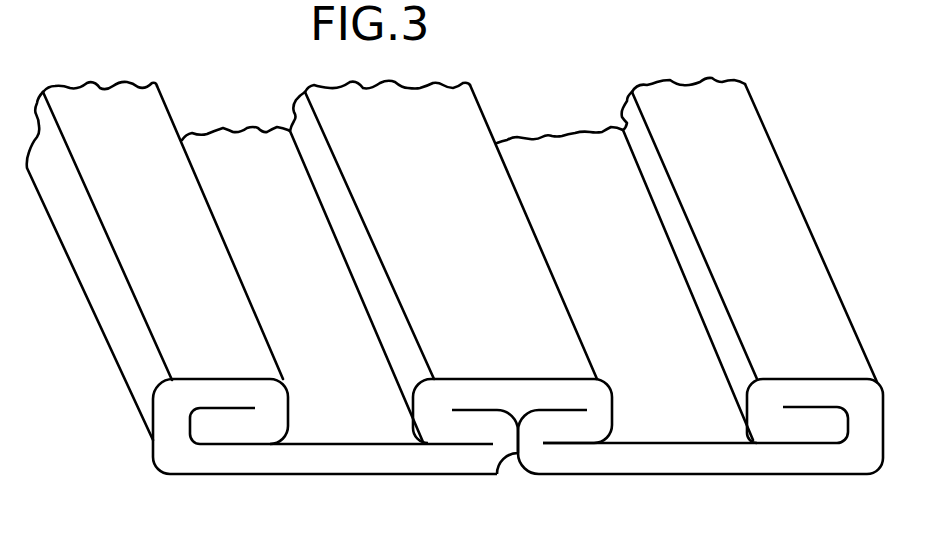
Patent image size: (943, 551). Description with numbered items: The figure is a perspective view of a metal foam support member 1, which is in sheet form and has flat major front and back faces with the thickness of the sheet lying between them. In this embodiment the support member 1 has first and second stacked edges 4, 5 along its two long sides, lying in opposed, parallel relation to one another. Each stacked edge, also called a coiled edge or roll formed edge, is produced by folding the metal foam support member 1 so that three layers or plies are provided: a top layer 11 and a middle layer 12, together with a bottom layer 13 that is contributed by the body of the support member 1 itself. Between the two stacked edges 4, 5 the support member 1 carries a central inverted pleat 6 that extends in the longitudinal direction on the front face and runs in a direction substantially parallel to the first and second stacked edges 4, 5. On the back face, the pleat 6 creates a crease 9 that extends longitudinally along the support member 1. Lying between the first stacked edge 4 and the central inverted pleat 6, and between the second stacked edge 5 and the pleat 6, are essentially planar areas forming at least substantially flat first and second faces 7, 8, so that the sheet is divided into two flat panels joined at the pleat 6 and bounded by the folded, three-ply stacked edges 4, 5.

The metal foam support member 1 is at (826, 195).
The first stacked edge 4 is at (112, 325).
The second stacked edge 5 is at (885, 420).
The central inverted pleat 6 is at (462, 67).
The first face 7 is at (292, 314).
The second face 8 is at (636, 312).
The crease 9 is at (518, 472).
The top layer 11 is at (215, 383).
The middle layer 12 is at (277, 422).
The bottom layer 13 is at (237, 457).